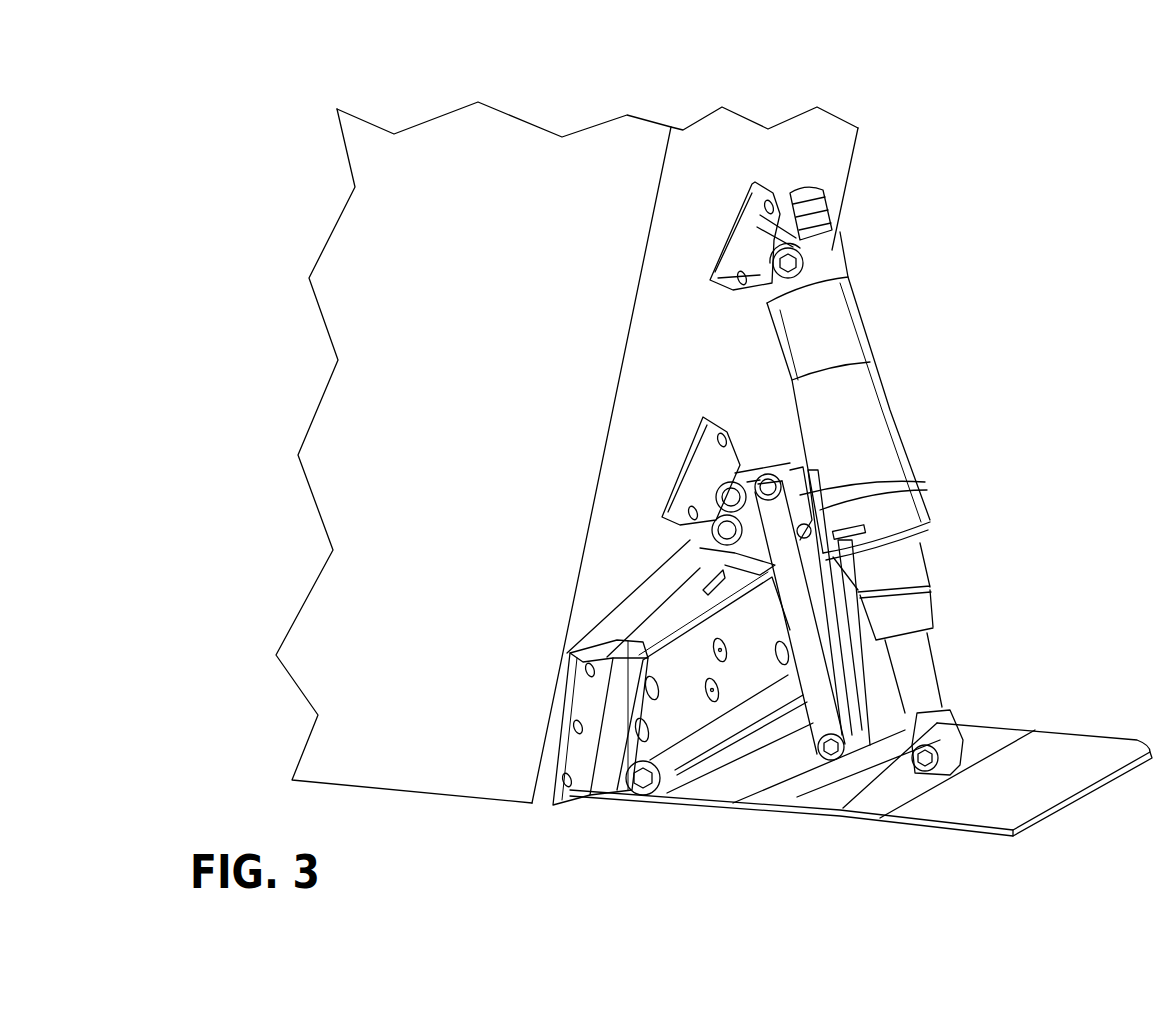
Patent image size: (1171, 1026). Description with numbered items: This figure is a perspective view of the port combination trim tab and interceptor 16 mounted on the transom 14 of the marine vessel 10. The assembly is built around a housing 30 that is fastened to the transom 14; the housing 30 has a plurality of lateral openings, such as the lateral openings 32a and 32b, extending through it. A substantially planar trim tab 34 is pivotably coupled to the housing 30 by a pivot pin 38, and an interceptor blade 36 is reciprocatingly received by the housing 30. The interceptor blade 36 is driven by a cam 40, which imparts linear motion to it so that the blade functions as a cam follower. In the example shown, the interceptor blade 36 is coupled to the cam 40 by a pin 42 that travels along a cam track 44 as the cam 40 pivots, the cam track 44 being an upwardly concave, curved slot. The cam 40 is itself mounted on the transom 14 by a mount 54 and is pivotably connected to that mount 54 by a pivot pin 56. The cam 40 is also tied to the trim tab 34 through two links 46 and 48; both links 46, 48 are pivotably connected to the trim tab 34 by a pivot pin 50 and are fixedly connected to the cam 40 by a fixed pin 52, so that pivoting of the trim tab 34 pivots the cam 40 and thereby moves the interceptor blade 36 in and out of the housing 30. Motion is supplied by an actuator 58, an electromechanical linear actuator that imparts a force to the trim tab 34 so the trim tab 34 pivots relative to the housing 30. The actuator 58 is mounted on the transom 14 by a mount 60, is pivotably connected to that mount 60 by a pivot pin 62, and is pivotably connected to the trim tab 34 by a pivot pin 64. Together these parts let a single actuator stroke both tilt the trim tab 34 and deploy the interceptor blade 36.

The marine vessel 10 is at (375, 85).
The transom 14 is at (695, 178).
The port combination trim tab and interceptor 16 is at (975, 365).
The housing 30 is at (678, 703).
The lateral opening 32a is at (717, 700).
The lateral opening 32b is at (728, 653).
The trim tab 34 is at (1083, 757).
The interceptor blade 36 is at (663, 597).
The pivot pin 38 is at (643, 790).
The cam 40 is at (797, 507).
The pin 42 is at (713, 527).
The cam track 44 is at (695, 562).
The link 46 is at (800, 640).
The link 48 is at (858, 677).
The pivot pin 50 is at (865, 717).
The fixed pin 52 is at (795, 466).
The mount 54 is at (680, 467).
The pivot pin 56 is at (716, 498).
The actuator 58 is at (855, 335).
The mount 60 is at (743, 220).
The pivot pin 62 is at (792, 262).
The pivot pin 64 is at (923, 773).